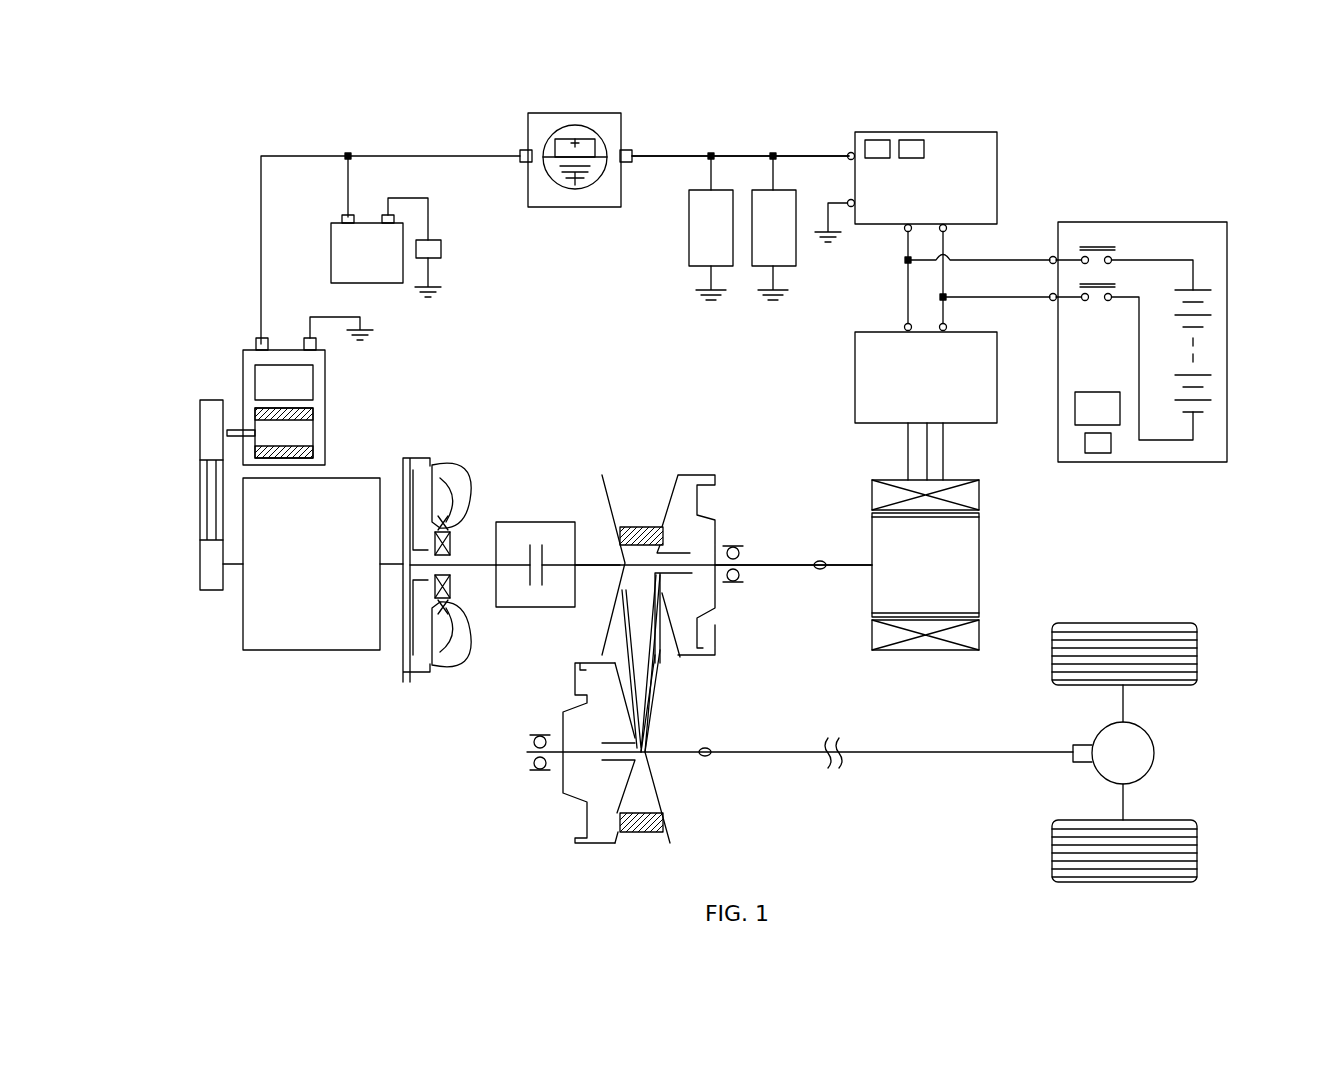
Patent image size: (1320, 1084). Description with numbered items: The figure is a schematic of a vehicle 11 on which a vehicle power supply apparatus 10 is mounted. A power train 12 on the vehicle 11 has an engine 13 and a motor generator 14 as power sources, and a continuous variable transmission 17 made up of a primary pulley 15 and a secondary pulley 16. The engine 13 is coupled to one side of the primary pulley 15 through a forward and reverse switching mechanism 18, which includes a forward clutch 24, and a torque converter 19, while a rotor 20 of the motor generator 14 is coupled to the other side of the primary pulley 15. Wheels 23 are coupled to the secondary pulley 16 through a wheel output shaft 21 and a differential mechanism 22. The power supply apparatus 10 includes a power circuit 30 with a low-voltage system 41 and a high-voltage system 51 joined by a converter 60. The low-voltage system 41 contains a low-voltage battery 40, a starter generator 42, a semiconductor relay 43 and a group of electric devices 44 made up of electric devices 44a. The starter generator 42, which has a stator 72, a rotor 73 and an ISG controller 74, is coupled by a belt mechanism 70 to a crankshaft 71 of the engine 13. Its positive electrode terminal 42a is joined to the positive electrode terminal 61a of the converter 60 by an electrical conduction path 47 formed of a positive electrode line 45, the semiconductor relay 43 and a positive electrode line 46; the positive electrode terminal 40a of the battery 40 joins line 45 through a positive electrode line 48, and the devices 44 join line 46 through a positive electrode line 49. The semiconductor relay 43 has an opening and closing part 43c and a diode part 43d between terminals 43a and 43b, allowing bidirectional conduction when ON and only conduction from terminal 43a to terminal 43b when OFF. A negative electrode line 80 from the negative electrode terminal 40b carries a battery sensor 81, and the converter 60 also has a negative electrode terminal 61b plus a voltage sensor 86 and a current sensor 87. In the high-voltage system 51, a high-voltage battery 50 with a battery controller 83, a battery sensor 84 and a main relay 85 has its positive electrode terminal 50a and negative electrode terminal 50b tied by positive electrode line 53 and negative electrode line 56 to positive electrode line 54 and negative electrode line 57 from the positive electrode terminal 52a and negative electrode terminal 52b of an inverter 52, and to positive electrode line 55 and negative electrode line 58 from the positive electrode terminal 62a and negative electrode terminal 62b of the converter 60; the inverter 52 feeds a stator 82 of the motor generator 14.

The vehicle power supply apparatus 10 is at (176, 133).
The vehicle 11 is at (248, 801).
The power train 12 is at (413, 714).
The engine 13 is at (284, 652).
The motor generator 14 is at (1002, 539).
The primary pulley 15 is at (708, 630).
The secondary pulley 16 is at (575, 694).
The continuous variable transmission 17 is at (561, 801).
The forward and reverse switching mechanism 18 is at (540, 522).
The torque converter 19 is at (468, 628).
The rotor 20 is at (871, 531).
The wheel output shaft 21 is at (786, 751).
The differential mechanism 22 is at (1156, 754).
The wheels 23 is at (1197, 655).
The forward clutch 24 is at (536, 590).
The power circuit 30 is at (1112, 147).
The low-voltage battery 40 is at (331, 268).
The positive electrode terminal 40a is at (341, 221).
The negative electrode terminal 40b is at (387, 224).
The low-voltage system 41 is at (276, 136).
The starter generator 42 is at (228, 357).
The positive electrode terminal 42a is at (255, 338).
The semiconductor relay 43 is at (598, 113).
The terminal 43a is at (522, 152).
The terminal 43b is at (634, 153).
The opening and closing part 43c is at (570, 190).
The diode part 43d is at (566, 136).
The group of electric devices 44 is at (678, 327).
The electric device 44a is at (688, 242).
The positive electrode line 45 is at (412, 155).
The positive electrode line 46 is at (739, 155).
The electrical conduction path 47 is at (376, 150).
The positive electrode line 48 is at (345, 181).
The positive electrode line 49 is at (773, 173).
The high-voltage battery 50 is at (1227, 250).
The positive electrode terminal 50a is at (1052, 256).
The negative electrode terminal 50b is at (1052, 301).
The high-voltage system 51 is at (1180, 184).
The inverter 52 is at (855, 368).
The positive electrode terminal 52a is at (908, 331).
The negative electrode terminal 52b is at (943, 331).
The positive electrode line 53 is at (1012, 259).
The positive electrode line 54 is at (905, 296).
The positive electrode line 55 is at (905, 236).
The negative electrode line 56 is at (1013, 299).
The negative electrode line 57 is at (947, 307).
The negative electrode line 58 is at (948, 291).
The converter 60 is at (997, 152).
The positive electrode terminal 61a is at (847, 154).
The negative electrode terminal 61b is at (848, 201).
The positive electrode terminal 62a is at (906, 225).
The negative electrode terminal 62b is at (946, 225).
The belt mechanism 70 is at (200, 502).
The crankshaft 71 is at (243, 568).
The stator 72 is at (291, 458).
The rotor 73 is at (240, 431).
The ISG controller 74 is at (255, 381).
The negative electrode line 80 is at (429, 221).
The battery sensor 81 is at (441, 252).
The stator 82 is at (980, 498).
The battery controller 83 is at (1104, 392).
The battery sensor 84 is at (1101, 454).
The main relay 85 is at (1108, 245).
The voltage sensor 86 is at (875, 140).
The current sensor 87 is at (912, 140).